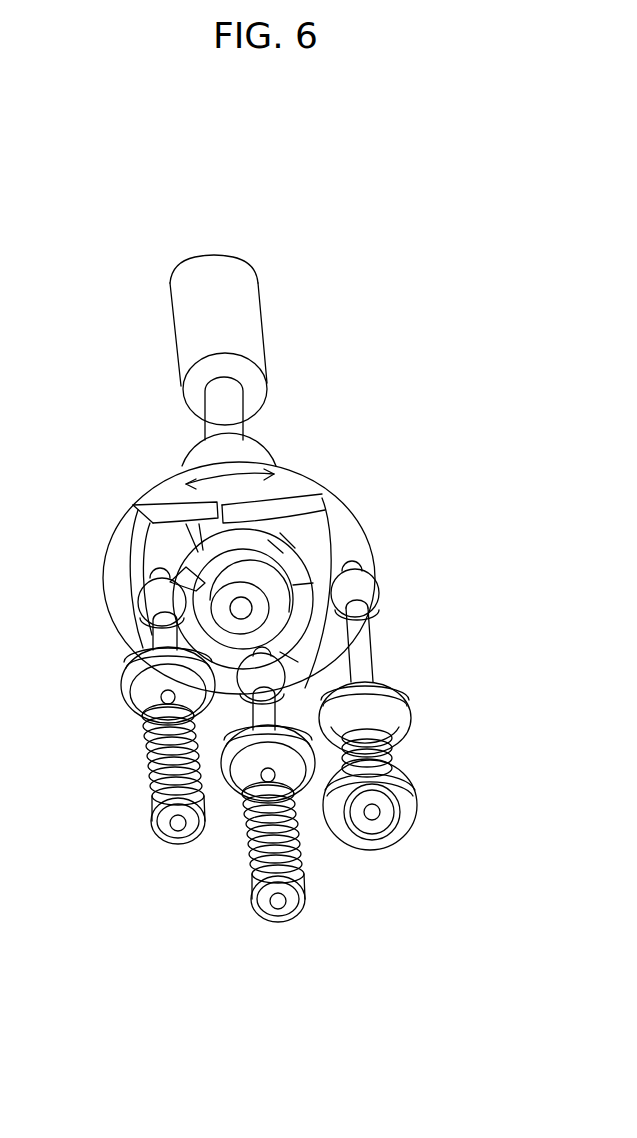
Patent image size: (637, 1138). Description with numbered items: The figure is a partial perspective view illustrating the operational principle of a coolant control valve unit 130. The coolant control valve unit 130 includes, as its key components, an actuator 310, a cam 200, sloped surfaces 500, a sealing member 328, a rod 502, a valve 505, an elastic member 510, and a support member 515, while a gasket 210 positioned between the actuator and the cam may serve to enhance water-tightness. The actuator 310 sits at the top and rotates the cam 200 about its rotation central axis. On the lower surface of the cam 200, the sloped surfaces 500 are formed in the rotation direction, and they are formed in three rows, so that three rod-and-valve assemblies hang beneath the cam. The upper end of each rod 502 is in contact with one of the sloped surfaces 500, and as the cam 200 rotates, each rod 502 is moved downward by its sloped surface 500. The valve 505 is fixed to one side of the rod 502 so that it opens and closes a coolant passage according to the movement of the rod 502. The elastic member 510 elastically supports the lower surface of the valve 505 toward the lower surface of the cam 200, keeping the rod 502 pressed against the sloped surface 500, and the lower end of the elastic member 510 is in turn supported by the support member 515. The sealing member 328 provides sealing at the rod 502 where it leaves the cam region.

The coolant control valve unit 130 is at (128, 486).
The cam 200 is at (320, 495).
The gasket 210 is at (266, 447).
The actuator 310 is at (250, 321).
The sealing member 328 is at (372, 580).
The sloped surface 500 is at (282, 512).
The rod 502 is at (370, 643).
The valve 505 is at (393, 695).
The elastic member 510 is at (390, 732).
The support member 515 is at (403, 797).